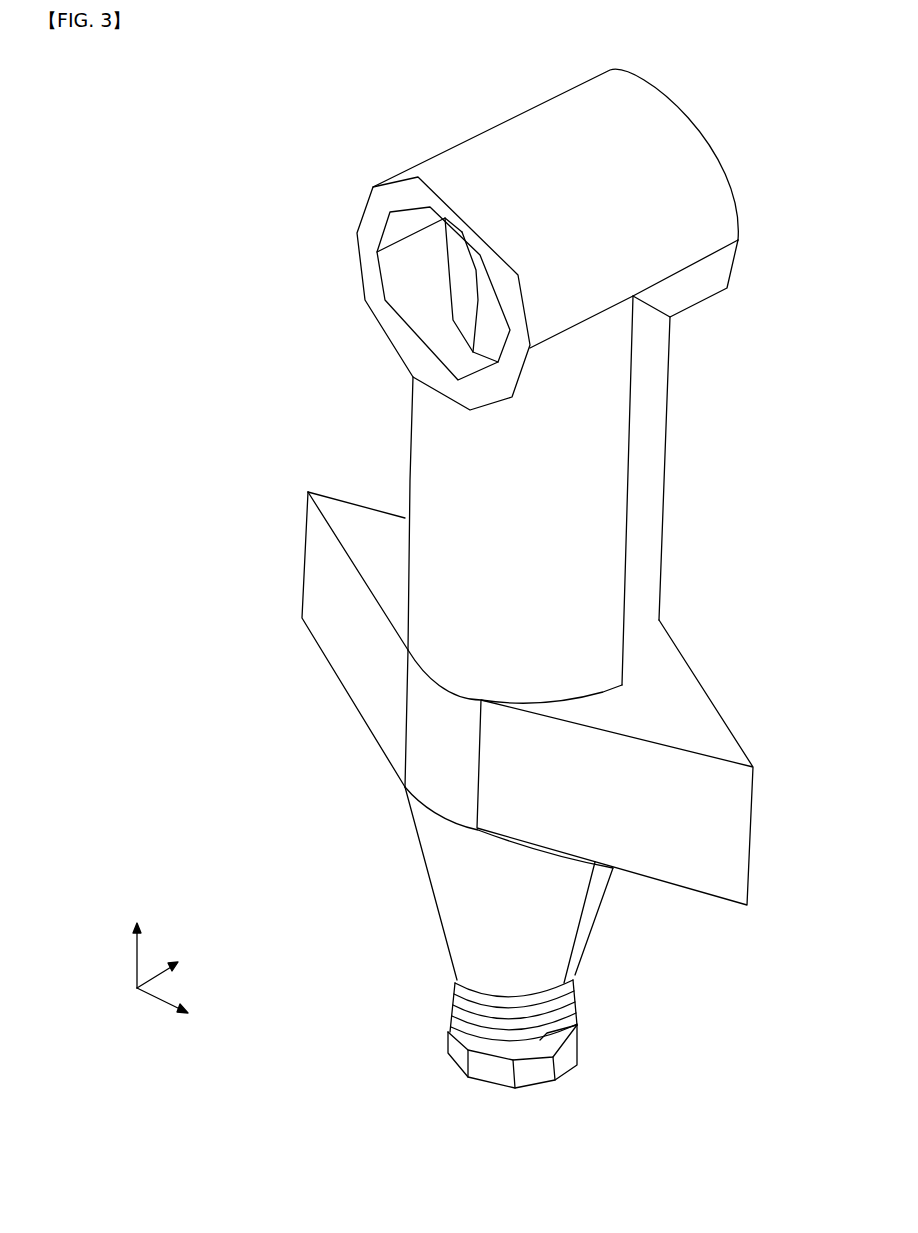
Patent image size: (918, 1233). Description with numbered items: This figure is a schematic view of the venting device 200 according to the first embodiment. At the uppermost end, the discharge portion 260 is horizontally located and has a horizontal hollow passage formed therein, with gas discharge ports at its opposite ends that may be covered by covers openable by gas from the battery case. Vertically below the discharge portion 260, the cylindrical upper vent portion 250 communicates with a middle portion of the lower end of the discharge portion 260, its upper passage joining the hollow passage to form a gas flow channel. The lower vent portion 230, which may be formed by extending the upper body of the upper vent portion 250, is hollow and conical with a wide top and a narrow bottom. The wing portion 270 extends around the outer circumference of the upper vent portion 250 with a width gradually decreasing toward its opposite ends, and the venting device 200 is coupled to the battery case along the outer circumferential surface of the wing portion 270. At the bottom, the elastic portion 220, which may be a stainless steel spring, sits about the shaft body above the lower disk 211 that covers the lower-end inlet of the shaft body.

The venting device 200 is at (148, 124).
The discharge portion 260 is at (650, 213).
The upper vent portion 250 is at (640, 535).
The wing portion 270 is at (703, 723).
The lower vent portion 230 is at (433, 890).
The elastic portion 220 is at (447, 990).
The lower disk 211 is at (450, 1037).